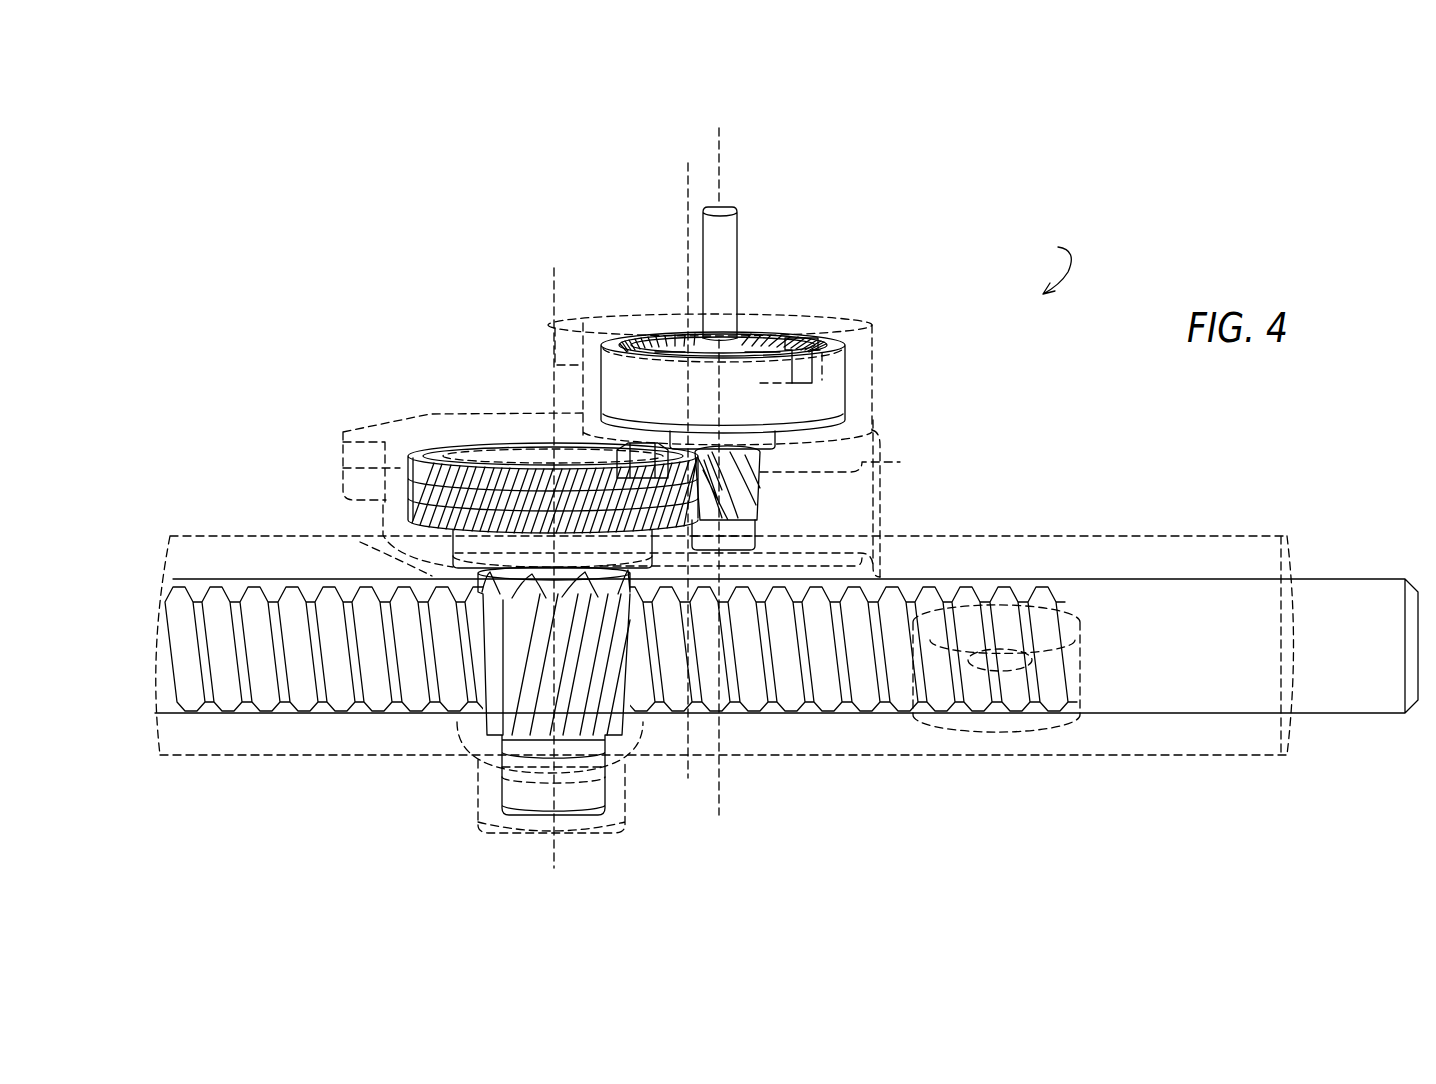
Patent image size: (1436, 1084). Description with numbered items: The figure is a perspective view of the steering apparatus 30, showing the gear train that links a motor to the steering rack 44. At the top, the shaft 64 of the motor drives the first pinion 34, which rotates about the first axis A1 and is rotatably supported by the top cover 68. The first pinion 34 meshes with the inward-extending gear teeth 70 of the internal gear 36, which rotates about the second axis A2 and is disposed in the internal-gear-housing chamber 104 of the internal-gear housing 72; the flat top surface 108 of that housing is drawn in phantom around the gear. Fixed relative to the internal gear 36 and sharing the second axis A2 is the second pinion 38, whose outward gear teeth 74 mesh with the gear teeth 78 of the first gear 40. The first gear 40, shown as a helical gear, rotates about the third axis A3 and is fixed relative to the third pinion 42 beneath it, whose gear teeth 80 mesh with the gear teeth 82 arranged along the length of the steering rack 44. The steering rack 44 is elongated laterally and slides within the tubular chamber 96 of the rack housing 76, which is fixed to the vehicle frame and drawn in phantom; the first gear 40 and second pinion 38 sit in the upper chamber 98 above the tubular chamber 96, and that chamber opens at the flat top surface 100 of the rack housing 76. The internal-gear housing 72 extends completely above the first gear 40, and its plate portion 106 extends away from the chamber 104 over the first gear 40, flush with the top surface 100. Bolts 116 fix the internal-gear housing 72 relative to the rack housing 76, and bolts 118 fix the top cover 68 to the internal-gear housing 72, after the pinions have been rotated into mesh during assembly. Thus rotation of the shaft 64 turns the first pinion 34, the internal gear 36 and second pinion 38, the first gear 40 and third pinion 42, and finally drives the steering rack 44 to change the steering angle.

The steering apparatus 30 is at (1049, 264).
The first pinion 34 is at (760, 335).
The internal gear 36 is at (830, 340).
The second pinion 38 is at (760, 488).
The first gear 40 is at (442, 446).
The third pinion 42 is at (480, 735).
The steering rack 44 is at (1322, 578).
The shaft 64 is at (738, 235).
The top cover 68 is at (665, 315).
The gear teeth 70 is at (670, 340).
The internal-gear housing 72 is at (475, 443).
The gear teeth 74 is at (730, 512).
The rack housing 76 is at (1000, 536).
The gear teeth 78 is at (408, 515).
The gear teeth 80 is at (573, 720).
The gear teeth 82 is at (913, 698).
The tubular chamber 96 is at (1177, 712).
The upper chamber 98 is at (455, 578).
The top surface 100 is at (880, 472).
The internal-gear-housing chamber 104 is at (880, 402).
The plate portion 106 is at (527, 413).
The top surface 108 is at (878, 333).
The bolts 116 is at (640, 443).
The bolts 118 is at (803, 337).
The first axis A1 is at (720, 471).
The second axis A2 is at (687, 472).
The third axis A3 is at (554, 568).